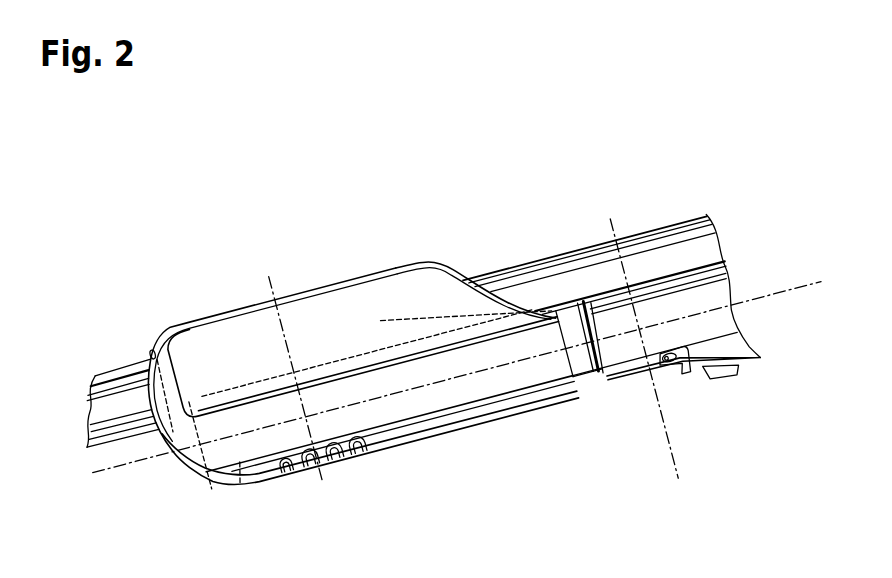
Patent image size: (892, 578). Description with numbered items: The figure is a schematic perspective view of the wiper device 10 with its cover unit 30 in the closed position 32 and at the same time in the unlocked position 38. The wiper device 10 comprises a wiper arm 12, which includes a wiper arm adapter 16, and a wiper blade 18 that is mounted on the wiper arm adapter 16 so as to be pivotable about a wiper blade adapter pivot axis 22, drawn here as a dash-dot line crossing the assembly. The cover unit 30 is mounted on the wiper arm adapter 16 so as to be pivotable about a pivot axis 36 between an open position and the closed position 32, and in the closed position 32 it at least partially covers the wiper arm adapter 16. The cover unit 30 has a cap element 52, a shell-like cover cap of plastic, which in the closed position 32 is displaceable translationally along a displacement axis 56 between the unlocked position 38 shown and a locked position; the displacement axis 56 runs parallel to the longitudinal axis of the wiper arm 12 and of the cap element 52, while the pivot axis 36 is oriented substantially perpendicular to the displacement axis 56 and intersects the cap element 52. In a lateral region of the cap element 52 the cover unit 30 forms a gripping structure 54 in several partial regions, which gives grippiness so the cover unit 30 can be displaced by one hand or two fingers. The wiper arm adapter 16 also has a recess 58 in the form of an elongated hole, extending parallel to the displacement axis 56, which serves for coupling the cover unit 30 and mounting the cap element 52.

The wiper device 10 is at (298, 237).
The wiper arm 12 is at (784, 320).
The wiper arm adapter 16 is at (630, 343).
The wiper blade 18 is at (74, 440).
The wiper blade adapter pivot axis 22 is at (317, 492).
The cover unit 30 is at (185, 512).
The closed position 32 is at (512, 440).
The pivot axis 36 is at (678, 458).
The unlocked position 38 is at (631, 433).
The cap element 52 is at (388, 298).
The gripping structure 54 is at (378, 490).
The displacement axis 56 is at (801, 284).
The recess 58 is at (690, 390).